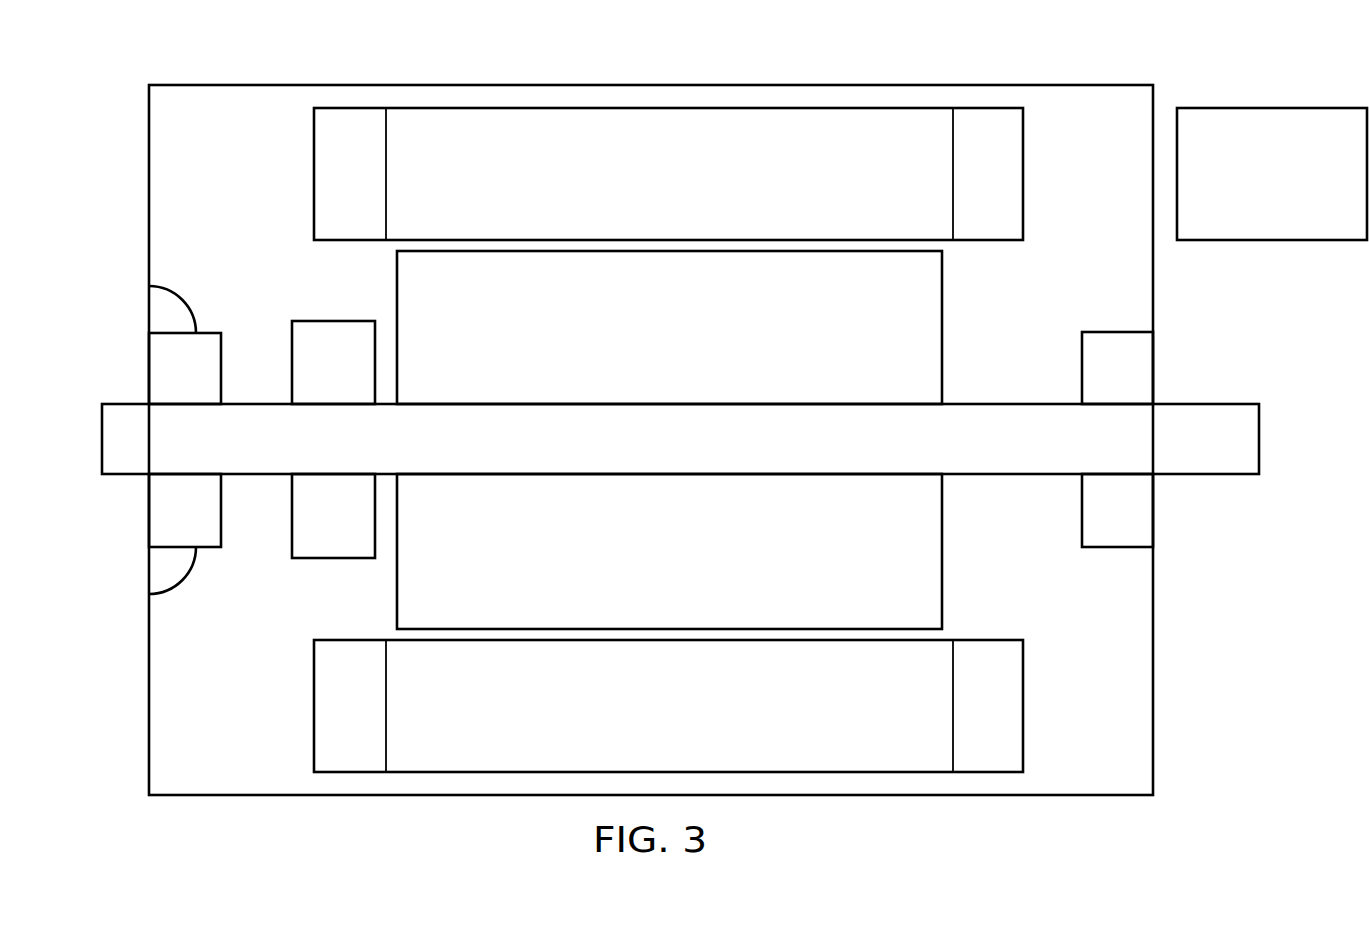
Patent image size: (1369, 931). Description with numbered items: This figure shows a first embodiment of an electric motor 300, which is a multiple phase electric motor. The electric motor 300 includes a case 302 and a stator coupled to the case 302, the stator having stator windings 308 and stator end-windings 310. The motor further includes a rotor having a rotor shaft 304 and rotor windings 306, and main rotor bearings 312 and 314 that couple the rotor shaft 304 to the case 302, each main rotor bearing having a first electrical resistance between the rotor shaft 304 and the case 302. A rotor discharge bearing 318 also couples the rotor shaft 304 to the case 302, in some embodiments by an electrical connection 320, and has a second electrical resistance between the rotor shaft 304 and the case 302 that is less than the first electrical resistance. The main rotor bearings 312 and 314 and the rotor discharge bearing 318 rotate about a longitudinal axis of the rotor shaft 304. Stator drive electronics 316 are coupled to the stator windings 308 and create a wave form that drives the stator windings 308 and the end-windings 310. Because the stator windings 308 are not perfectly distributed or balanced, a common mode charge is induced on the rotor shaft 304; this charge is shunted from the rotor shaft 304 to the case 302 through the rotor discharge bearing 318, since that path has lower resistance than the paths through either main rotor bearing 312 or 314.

The electric motor 300 is at (325, 71).
The case 302 is at (1158, 635).
The rotor shaft 304 is at (820, 452).
The rotor windings 306 is at (691, 374).
The stator windings 308 is at (691, 208).
The stator end-windings 310 is at (372, 191).
The main rotor bearing 312 is at (1140, 384).
The main rotor bearing 314 is at (355, 377).
The stator drive electronics 316 is at (1294, 223).
The rotor discharge bearing 318 is at (206, 384).
The electrical connection 320 is at (187, 287).